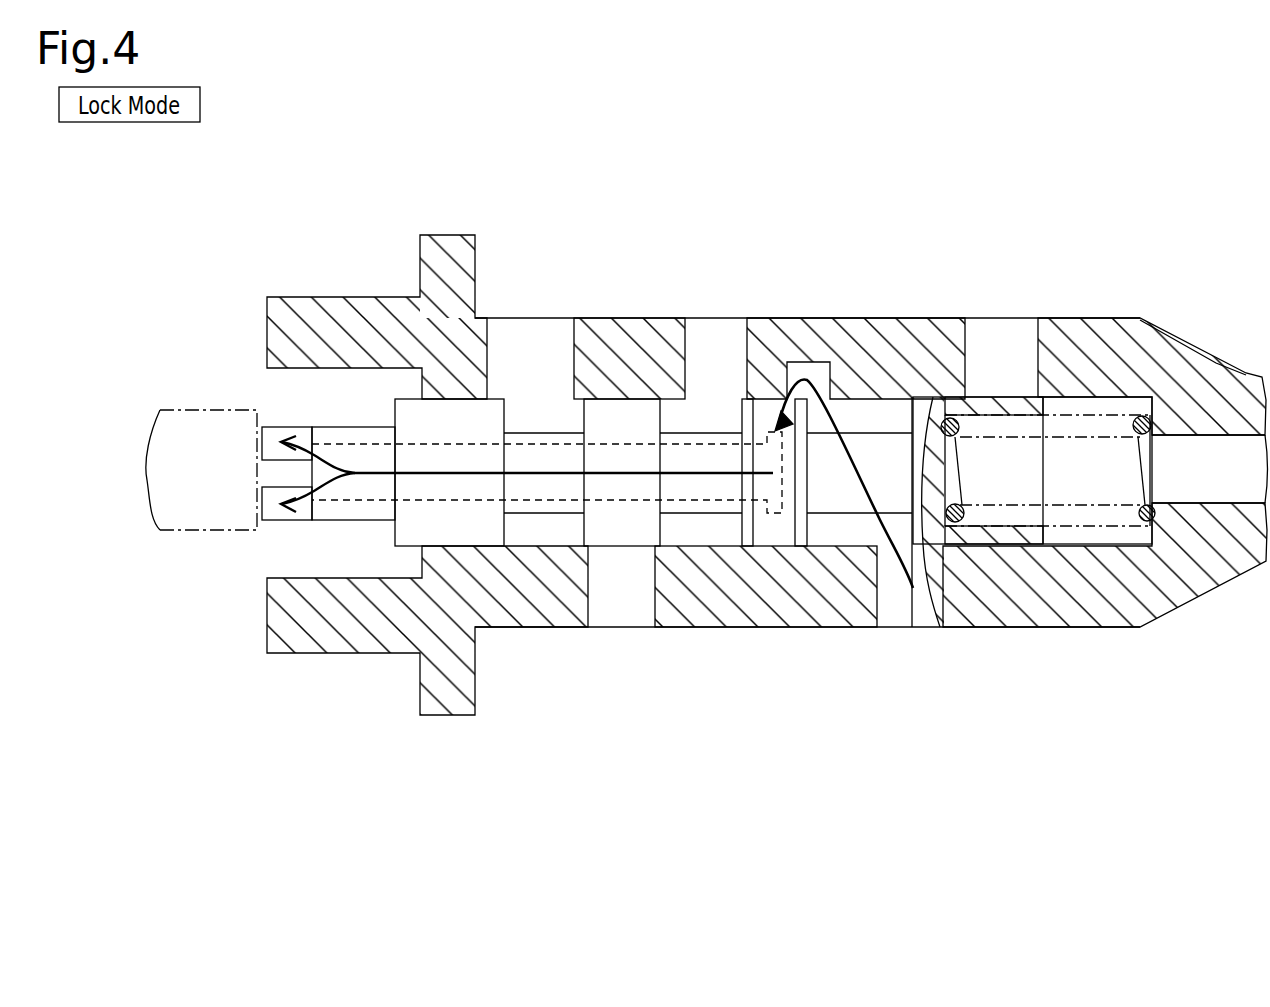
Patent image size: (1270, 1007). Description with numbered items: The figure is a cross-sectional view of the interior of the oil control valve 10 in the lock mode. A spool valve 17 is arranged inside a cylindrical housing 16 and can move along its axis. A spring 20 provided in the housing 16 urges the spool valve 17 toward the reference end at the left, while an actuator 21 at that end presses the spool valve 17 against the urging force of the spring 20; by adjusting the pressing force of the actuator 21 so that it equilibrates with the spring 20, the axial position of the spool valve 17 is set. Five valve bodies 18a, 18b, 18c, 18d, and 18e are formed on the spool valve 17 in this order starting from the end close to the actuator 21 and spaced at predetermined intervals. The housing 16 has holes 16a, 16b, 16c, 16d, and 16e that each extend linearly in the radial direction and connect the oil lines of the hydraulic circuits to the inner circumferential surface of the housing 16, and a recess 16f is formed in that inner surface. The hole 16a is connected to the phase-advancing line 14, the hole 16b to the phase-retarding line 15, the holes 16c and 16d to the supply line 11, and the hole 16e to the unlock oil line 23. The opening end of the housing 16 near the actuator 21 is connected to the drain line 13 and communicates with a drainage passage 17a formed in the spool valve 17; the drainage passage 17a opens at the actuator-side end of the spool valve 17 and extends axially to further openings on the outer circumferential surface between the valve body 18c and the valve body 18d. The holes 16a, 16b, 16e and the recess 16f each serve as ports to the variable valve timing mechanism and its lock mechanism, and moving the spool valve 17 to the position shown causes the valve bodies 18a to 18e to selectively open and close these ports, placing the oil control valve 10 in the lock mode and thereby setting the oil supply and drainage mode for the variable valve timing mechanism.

The oil control valve 10 is at (1125, 226).
The supply line 11 is at (1003, 318).
The drain line 13 is at (267, 568).
The phase-advancing line 14 is at (530, 318).
The phase-retarding line 15 is at (719, 318).
The housing 16 is at (1124, 317).
The hole 16a is at (567, 332).
The hole 16b is at (742, 332).
The hole 16c is at (1027, 332).
The hole 16d is at (654, 627).
The hole 16e is at (878, 627).
The recess 16f is at (823, 375).
The spool valve 17 is at (357, 427).
The drainage passage 17a is at (356, 498).
The valve body 18a is at (387, 532).
The valve body 18b is at (584, 532).
The valve body 18c is at (742, 532).
The valve body 18d is at (808, 532).
The valve body 18e is at (938, 531).
The spring 20 is at (1152, 440).
The actuator 21 is at (218, 533).
The unlock oil line 23 is at (912, 627).